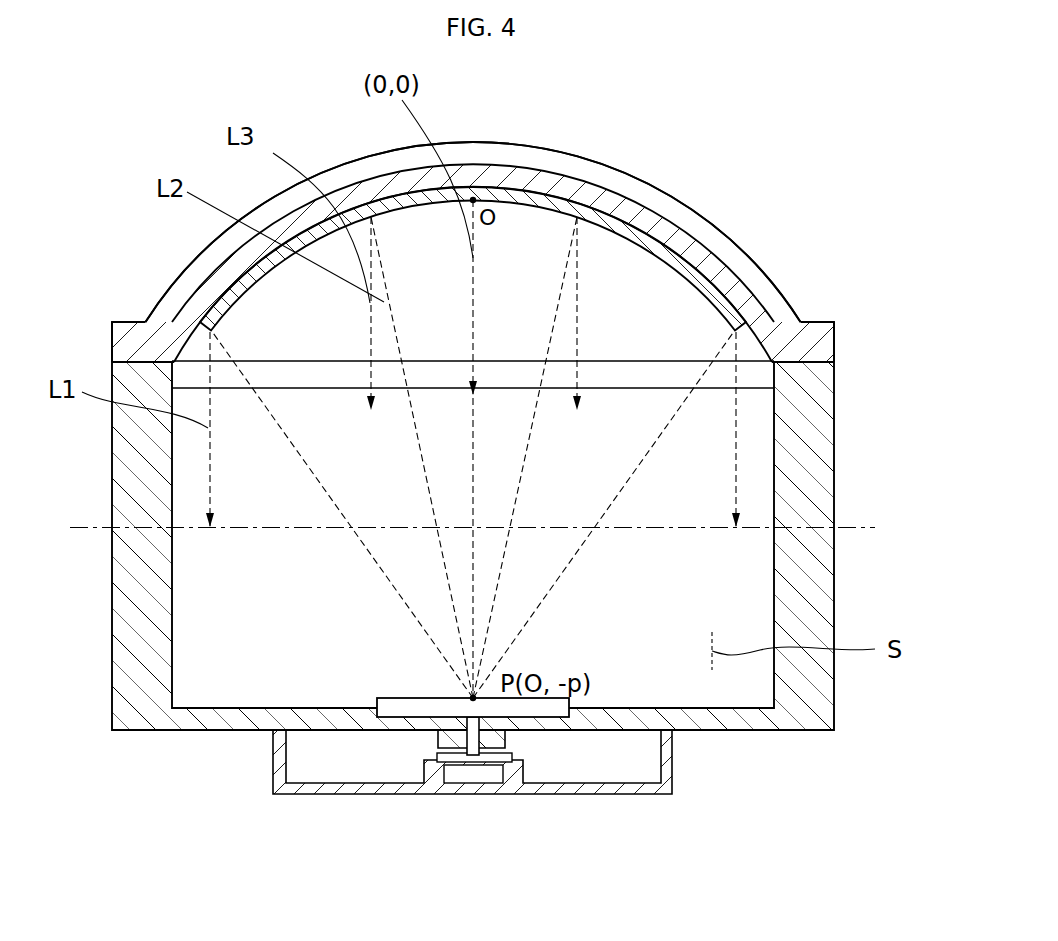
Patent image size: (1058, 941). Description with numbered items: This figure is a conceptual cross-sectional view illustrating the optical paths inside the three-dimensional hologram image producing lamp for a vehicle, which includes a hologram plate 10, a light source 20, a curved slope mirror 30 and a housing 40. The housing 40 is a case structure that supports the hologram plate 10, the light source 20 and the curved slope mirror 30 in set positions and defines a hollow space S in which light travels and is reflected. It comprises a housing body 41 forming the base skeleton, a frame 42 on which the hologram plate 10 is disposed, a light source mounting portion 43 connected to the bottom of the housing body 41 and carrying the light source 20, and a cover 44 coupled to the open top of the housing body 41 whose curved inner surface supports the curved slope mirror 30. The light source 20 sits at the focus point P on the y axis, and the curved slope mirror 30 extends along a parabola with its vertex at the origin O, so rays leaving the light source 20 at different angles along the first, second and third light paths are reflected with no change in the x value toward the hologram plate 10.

The hologram plate 10 is at (503, 470).
The light source 20 is at (393, 705).
The curved slope mirror 30 is at (607, 222).
The housing 40 is at (537, 470).
The housing body 41 is at (823, 590).
The frame 42 is at (802, 342).
The light source mounting portion 43 is at (730, 722).
The cover 44 is at (688, 232).